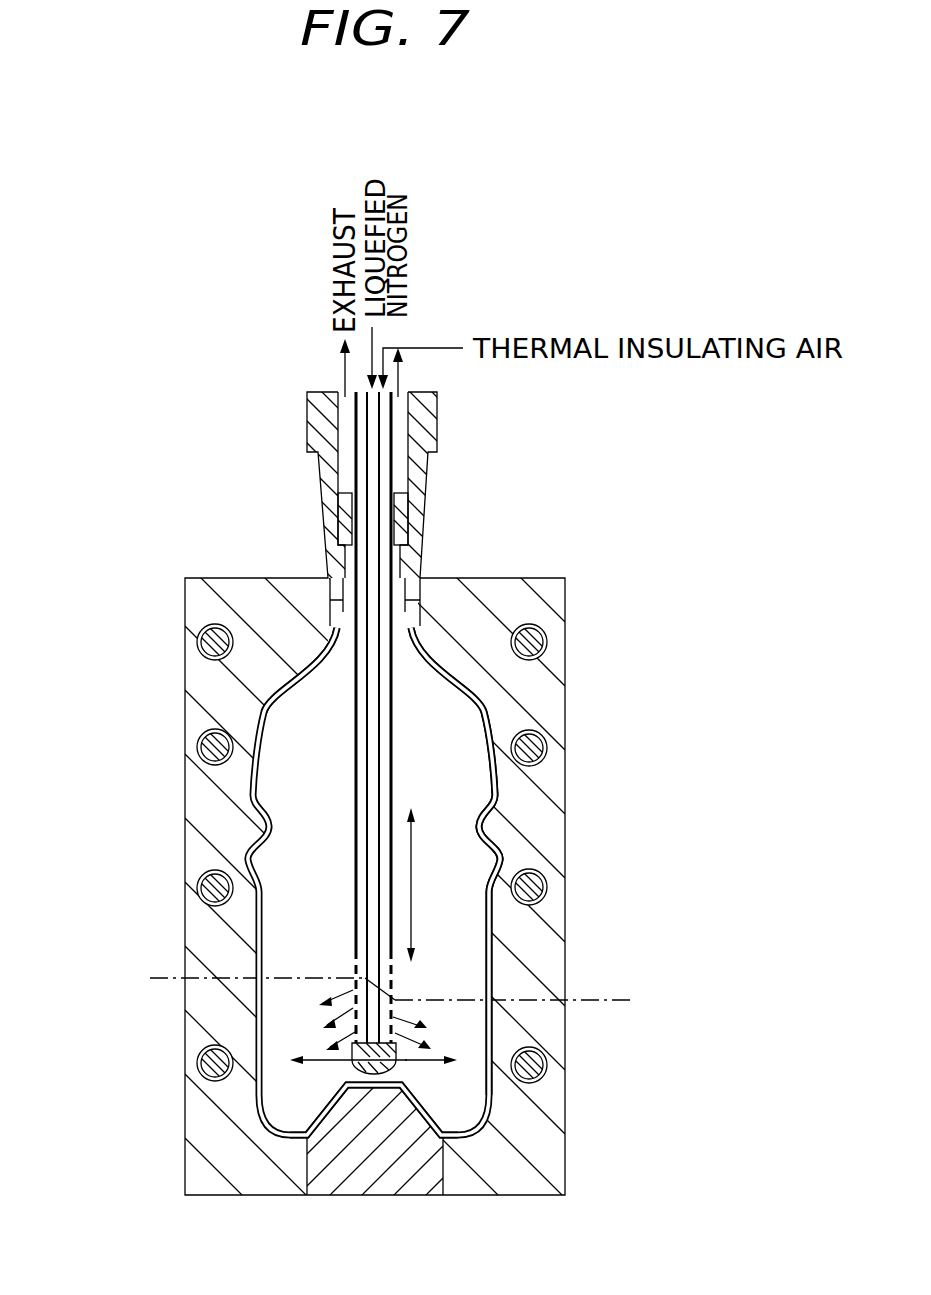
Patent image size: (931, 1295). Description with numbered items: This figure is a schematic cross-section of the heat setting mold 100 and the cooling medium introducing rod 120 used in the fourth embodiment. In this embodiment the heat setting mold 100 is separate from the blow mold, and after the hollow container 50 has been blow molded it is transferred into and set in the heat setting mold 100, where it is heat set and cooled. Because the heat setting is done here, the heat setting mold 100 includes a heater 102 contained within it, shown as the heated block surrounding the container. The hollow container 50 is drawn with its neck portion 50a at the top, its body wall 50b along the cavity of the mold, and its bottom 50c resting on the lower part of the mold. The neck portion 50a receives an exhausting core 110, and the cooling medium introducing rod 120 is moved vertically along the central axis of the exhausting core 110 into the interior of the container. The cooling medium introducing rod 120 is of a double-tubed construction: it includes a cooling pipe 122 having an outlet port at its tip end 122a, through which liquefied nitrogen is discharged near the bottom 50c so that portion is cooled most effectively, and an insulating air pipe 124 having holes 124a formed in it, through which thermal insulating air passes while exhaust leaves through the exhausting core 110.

The hollow container 50 is at (242, 818).
The neck portion 50a is at (340, 640).
The body wall portion of bottle 50b is at (507, 863).
The bottom 50c is at (425, 1085).
The heat setting mold 100 is at (205, 1150).
The heater 102 is at (550, 632).
The exhausting core 110 is at (428, 445).
The cooling medium introducing rod 120 is at (365, 733).
The cooling pipe 122 is at (387, 775).
The tip of inner tube 122a is at (408, 1056).
The insulating air pipe 124 is at (395, 803).
The holes 124a is at (357, 990).